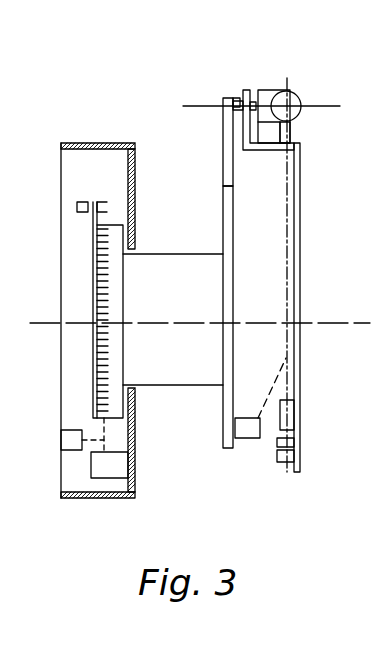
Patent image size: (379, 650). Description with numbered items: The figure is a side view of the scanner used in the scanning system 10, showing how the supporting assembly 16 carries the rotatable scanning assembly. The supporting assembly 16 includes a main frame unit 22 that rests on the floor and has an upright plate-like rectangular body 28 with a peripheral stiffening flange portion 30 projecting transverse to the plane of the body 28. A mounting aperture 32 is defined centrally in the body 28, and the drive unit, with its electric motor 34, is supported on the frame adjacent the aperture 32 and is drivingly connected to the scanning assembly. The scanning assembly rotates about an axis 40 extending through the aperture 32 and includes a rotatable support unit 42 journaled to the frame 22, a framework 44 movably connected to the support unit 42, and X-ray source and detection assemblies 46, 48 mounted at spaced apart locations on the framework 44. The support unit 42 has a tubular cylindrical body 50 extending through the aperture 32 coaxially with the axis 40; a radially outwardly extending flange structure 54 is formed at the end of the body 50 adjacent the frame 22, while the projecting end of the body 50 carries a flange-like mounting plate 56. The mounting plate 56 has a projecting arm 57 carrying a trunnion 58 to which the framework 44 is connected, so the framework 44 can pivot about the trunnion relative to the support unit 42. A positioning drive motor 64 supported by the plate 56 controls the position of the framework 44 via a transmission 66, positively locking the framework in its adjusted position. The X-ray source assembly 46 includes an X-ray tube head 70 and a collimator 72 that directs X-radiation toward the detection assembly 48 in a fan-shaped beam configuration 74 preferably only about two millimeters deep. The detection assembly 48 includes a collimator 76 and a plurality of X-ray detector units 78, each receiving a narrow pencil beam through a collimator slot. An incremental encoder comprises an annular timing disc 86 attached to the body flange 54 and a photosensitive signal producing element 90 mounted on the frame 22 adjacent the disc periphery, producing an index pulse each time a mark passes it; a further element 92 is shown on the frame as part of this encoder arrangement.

The scanning system 10 is at (193, 75).
The supporting assembly 16 is at (55, 145).
The main frame unit 22 is at (95, 498).
The upright plate-like rectangular body 28 is at (137, 200).
The peripheral stiffening flange portion 30 is at (97, 160).
The mounting aperture 32 is at (134, 387).
The electric motor 34 is at (109, 465).
The axis 40 is at (310, 320).
The rotatable support unit 42 is at (150, 258).
The framework 44 is at (308, 240).
The X-ray source assembly 46 is at (293, 81).
The X-ray detection assembly 48 is at (319, 439).
The tubular cylindrical body 50 is at (183, 309).
The flange structure 54 is at (93, 232).
The mounting plate 56 is at (233, 290).
The projecting arm 57 is at (223, 165).
The trunnion 58 is at (246, 90).
The positioning drive motor 64 is at (245, 438).
The transmission 66 is at (268, 397).
The X-ray tube head 70 is at (298, 99).
The collimator 72 is at (292, 130).
The fan-shaped beam configuration 74 is at (289, 198).
The collimator 76 is at (292, 420).
The X-ray detector units 78 is at (296, 445).
The annular timing disc 86 is at (92, 265).
The photosensitive signal producing element 90 is at (77, 207).
The controller 92 is at (82, 435).